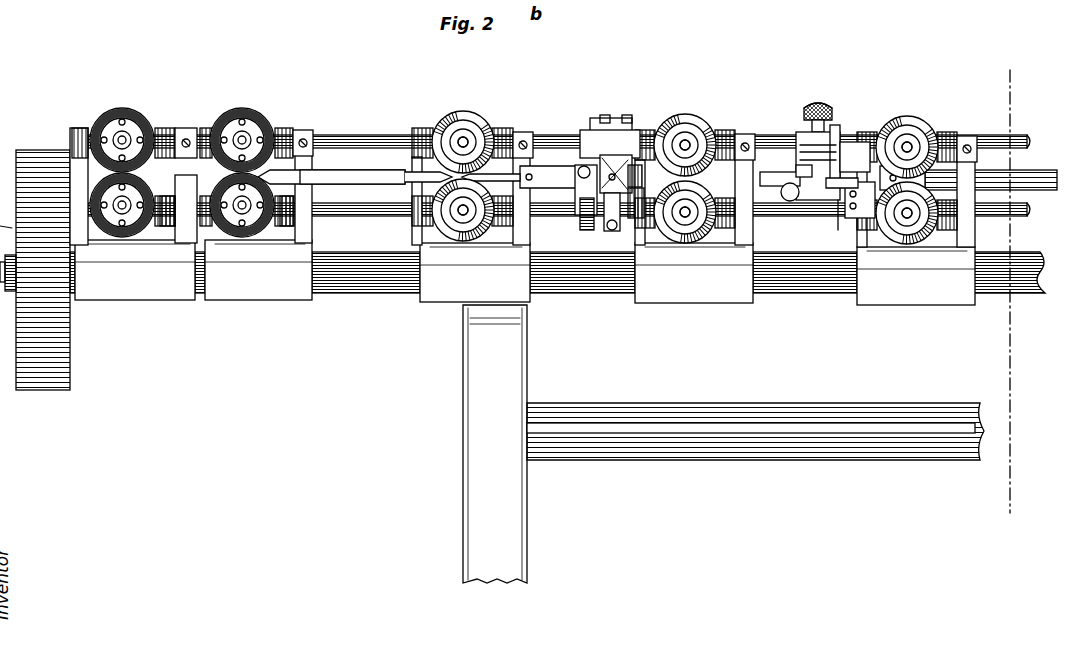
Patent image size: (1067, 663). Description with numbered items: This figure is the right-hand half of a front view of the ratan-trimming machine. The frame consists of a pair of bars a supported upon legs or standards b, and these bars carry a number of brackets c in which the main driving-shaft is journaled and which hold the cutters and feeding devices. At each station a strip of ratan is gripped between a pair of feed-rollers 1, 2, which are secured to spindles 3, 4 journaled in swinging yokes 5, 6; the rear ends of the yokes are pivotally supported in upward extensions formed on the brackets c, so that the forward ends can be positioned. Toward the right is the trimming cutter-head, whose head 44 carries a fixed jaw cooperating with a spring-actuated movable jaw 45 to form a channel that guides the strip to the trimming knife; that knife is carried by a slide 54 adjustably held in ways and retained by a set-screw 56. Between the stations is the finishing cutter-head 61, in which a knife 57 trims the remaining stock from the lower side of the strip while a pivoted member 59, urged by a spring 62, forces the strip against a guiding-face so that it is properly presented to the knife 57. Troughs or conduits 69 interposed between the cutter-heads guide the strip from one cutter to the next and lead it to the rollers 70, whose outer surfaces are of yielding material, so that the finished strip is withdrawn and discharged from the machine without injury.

The feed-roller 1 is at (487, 122).
The feed-roller 2 is at (438, 224).
The spindle 3 is at (463, 140).
The spindle 4 is at (468, 214).
The swinging yoke 5 is at (80, 128).
The swinging yoke 6 is at (948, 236).
The head 44 is at (855, 157).
The movable jaw 45 is at (834, 214).
The slide 54 is at (808, 186).
The set-screw 56 is at (820, 104).
The knife 57 is at (588, 180).
The member 59 is at (582, 205).
The cutter-head 61 is at (629, 176).
The spring 62 is at (605, 222).
The troughs or conduits 69 is at (360, 175).
The rollers 70 is at (225, 116).
The bars a is at (800, 295).
The legs or standards b is at (723, 444).
The brackets c is at (525, 272).